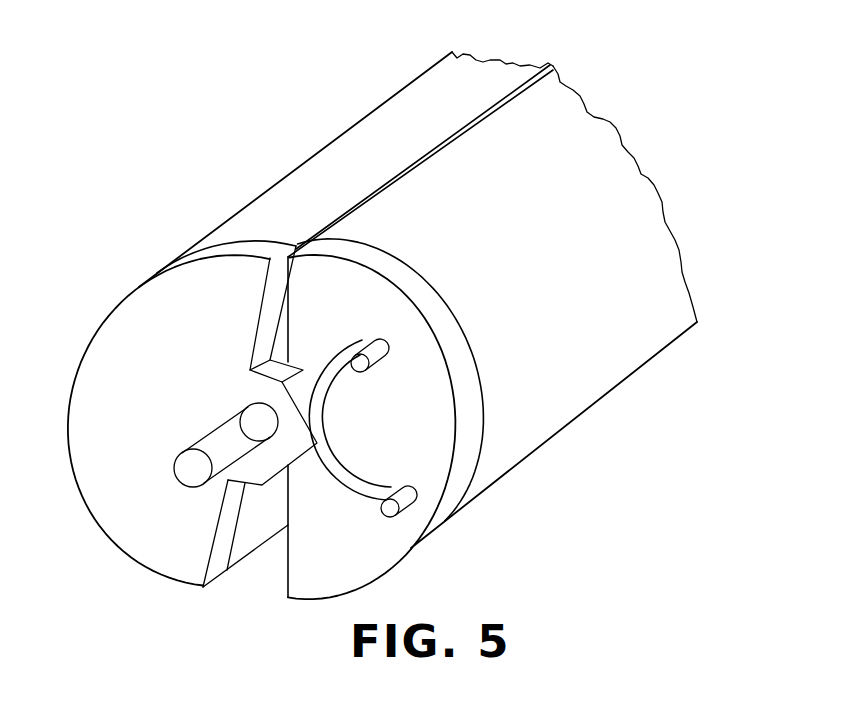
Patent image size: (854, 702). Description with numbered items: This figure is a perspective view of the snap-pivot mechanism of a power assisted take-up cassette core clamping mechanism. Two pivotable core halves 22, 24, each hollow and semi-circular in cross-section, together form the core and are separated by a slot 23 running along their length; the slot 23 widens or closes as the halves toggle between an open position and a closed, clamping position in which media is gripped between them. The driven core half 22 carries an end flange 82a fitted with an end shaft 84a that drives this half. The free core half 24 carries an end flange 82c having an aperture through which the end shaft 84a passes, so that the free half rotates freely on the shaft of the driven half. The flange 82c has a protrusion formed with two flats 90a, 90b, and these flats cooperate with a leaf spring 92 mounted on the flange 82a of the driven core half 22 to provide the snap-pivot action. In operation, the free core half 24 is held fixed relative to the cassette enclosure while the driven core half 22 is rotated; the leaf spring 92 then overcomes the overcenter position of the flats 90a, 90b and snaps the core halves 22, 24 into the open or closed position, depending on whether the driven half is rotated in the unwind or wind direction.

The pivotable core half 22 is at (603, 398).
The slot 23 is at (259, 568).
The pivotable core half 24 is at (318, 147).
The end flange 82a is at (413, 538).
The end flange 82c is at (120, 327).
The end shaft 84a is at (217, 437).
The flat 90a is at (300, 380).
The flat 90b is at (298, 462).
The leaf spring 92 is at (347, 472).